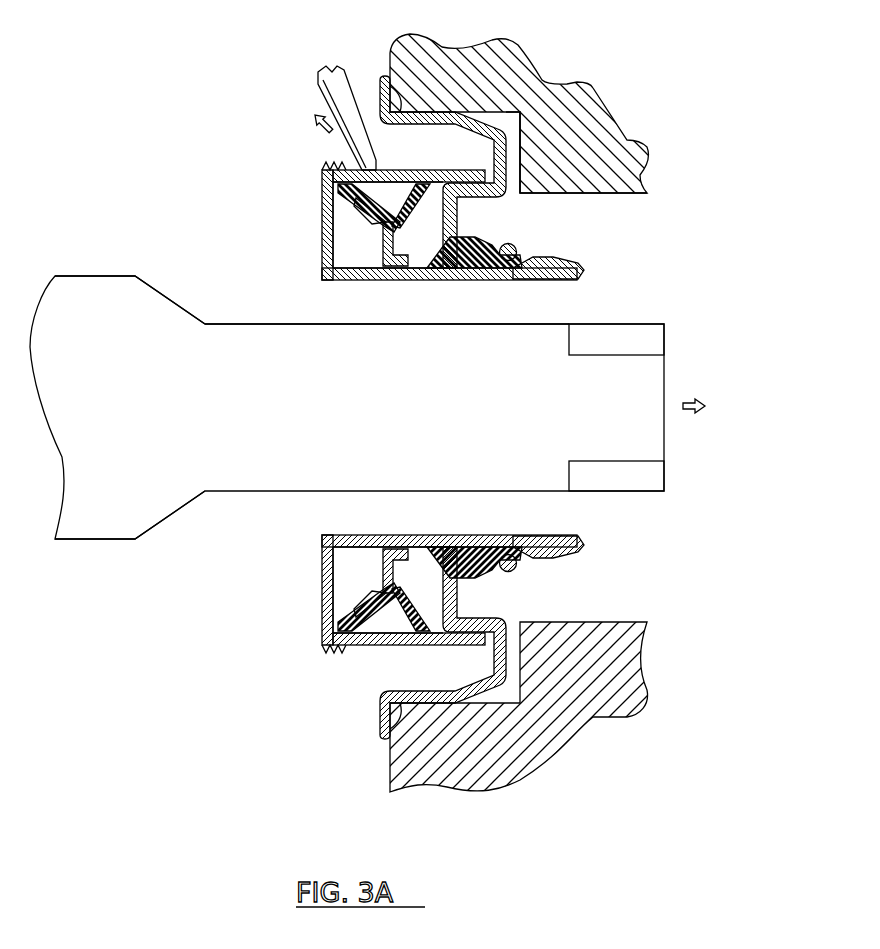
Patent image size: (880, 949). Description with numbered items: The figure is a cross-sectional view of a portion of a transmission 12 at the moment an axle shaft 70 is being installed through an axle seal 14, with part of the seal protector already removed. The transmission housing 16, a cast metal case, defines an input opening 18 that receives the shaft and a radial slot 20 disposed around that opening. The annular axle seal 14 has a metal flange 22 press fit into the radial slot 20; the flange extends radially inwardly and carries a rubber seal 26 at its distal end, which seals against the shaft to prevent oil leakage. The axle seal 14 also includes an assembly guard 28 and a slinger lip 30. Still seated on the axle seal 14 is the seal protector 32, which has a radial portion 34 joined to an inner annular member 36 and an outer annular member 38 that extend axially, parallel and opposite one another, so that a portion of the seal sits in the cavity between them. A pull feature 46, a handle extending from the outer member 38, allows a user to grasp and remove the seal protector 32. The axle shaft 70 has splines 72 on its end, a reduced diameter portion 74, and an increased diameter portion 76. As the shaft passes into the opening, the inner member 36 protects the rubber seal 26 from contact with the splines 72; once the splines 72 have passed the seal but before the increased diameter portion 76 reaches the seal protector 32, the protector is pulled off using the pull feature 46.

The transmission 12 is at (651, 68).
The axle seal 14 is at (537, 240).
The transmission housing 16 is at (578, 82).
The input opening 18 is at (600, 193).
The radial slot 20 is at (519, 183).
The metal flange 22 is at (398, 120).
The rubber seal 26 is at (465, 237).
The assembly guard 28 is at (391, 235).
The slinger lip 30 is at (357, 207).
The seal protector 32 is at (587, 271).
The radial portion 34 is at (321, 205).
The inner annular member 36 is at (457, 280).
The outer annular member 38 is at (445, 168).
The pull feature 46 is at (348, 100).
The axle shaft 70 is at (360, 427).
The splines 72 is at (645, 323).
The reduced diameter portion 74 is at (525, 323).
The increased diameter portion 76 is at (88, 274).